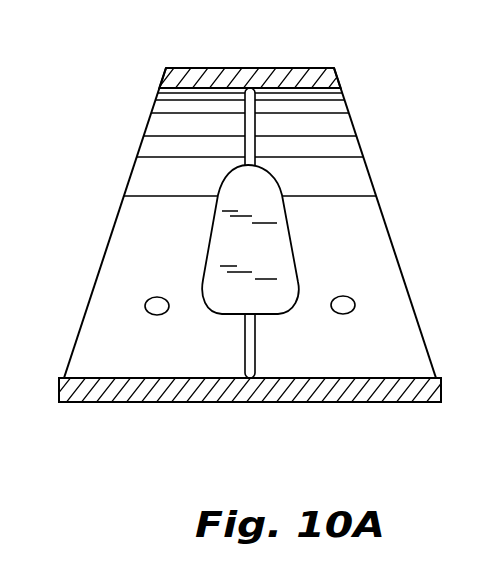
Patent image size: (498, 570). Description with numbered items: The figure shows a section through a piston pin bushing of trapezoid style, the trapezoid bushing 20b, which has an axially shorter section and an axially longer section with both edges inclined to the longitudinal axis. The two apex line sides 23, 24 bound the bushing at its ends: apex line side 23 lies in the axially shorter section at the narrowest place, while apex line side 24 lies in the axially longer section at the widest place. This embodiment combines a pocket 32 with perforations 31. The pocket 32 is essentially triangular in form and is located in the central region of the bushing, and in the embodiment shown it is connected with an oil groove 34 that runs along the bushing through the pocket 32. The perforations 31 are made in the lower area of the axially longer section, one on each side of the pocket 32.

The trapezoid bushing 20b is at (124, 418).
The apex line side 23 is at (193, 78).
The apex line side 24 is at (365, 387).
The perforations 31 is at (145, 306).
The pocket 32 is at (277, 238).
The oil groove 34 is at (257, 104).